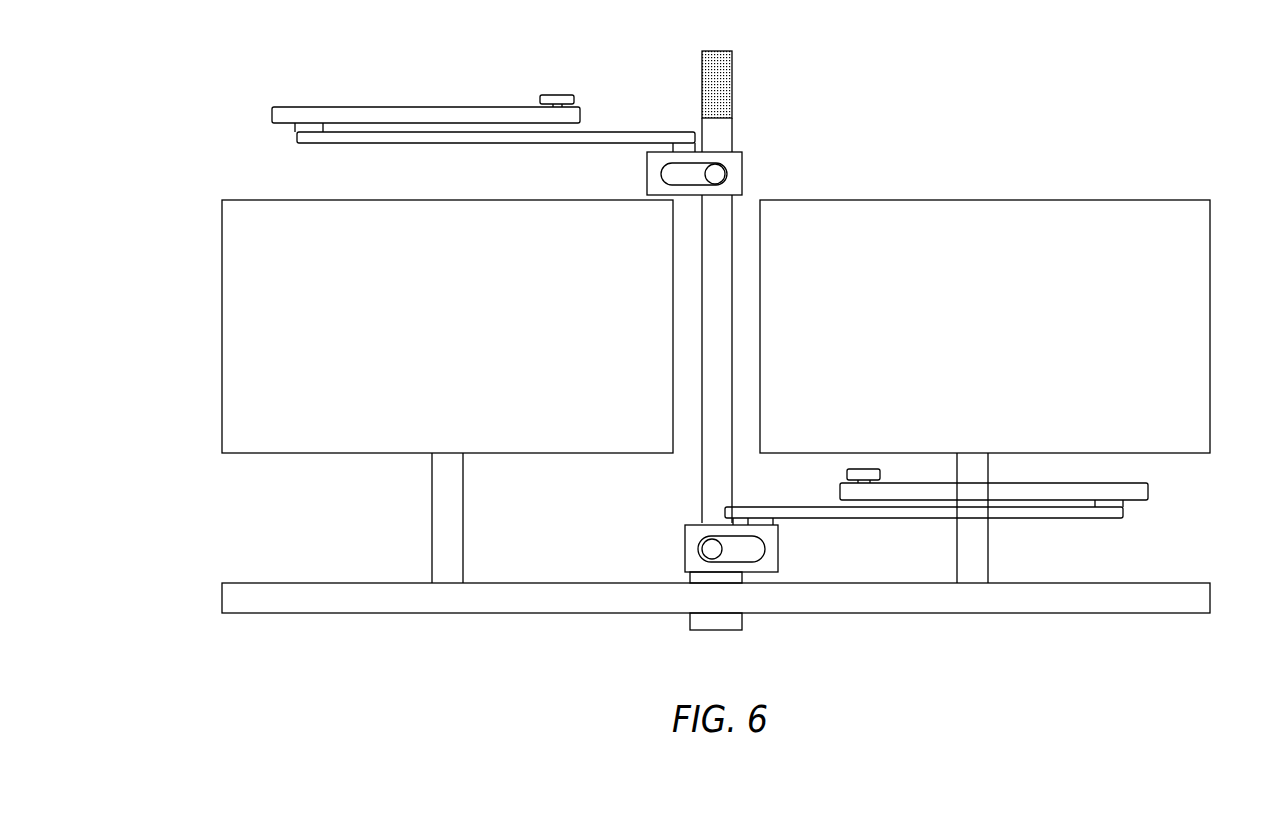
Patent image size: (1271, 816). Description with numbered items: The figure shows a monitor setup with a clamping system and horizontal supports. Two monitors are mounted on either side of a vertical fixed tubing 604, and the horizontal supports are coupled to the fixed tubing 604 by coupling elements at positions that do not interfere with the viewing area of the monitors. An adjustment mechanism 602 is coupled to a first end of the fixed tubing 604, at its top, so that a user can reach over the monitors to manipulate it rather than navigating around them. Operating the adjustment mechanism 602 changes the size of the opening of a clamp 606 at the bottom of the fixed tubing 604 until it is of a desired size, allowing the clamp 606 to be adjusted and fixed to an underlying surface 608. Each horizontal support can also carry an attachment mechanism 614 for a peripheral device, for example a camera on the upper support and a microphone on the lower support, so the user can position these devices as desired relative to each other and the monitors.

The adjustment mechanism 602 is at (735, 78).
The fixed tubing 604 is at (738, 130).
The clamp 606 is at (690, 578).
The underlying surface 608 is at (1172, 592).
The attachment mechanism 614 is at (554, 94).